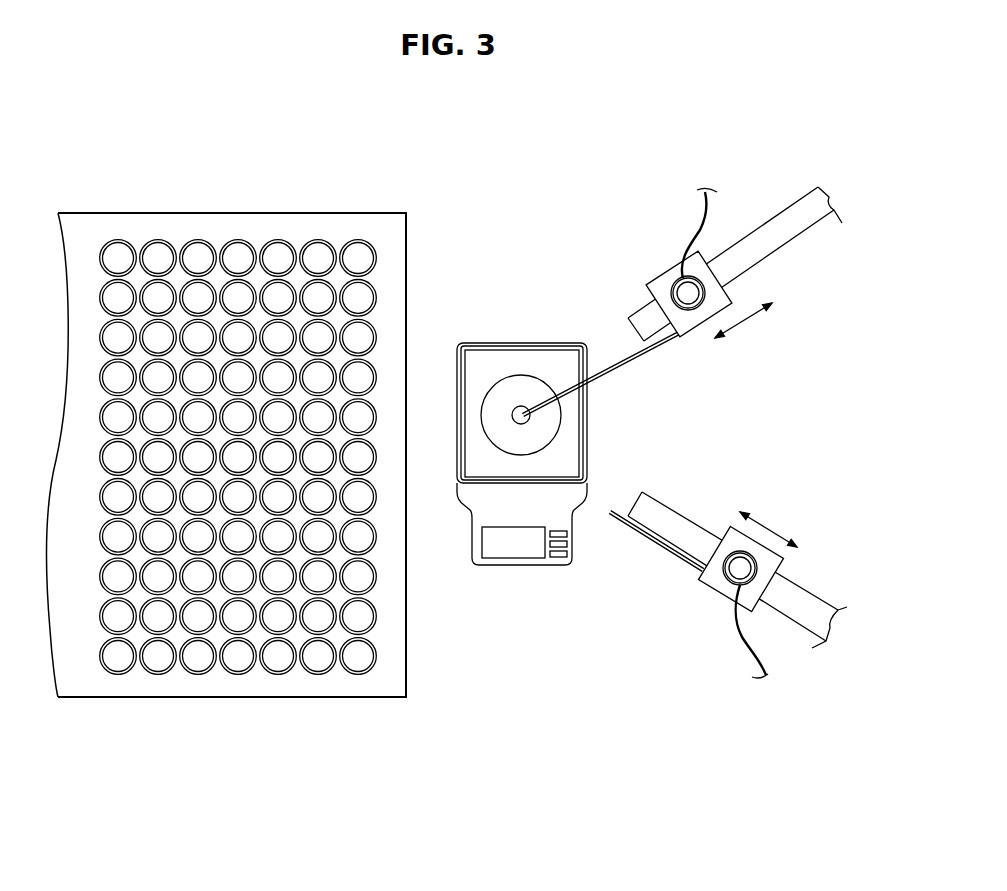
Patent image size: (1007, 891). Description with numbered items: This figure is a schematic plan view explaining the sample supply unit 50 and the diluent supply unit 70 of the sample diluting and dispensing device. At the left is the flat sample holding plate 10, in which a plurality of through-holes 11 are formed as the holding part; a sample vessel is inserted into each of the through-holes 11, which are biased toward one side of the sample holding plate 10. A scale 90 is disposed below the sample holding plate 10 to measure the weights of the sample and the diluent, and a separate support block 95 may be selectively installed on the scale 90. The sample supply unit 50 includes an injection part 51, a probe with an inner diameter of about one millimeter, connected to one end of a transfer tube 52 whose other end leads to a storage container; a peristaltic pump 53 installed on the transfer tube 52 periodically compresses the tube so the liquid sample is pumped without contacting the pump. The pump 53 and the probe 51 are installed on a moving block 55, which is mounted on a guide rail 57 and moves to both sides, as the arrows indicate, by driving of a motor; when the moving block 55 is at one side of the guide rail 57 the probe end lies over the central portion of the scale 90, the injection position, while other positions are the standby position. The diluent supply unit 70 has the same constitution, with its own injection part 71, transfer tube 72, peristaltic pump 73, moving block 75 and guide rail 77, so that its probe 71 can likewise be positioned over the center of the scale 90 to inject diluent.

The sample holding plate 10 is at (221, 697).
The through-holes 11 is at (238, 262).
The scale 90 is at (475, 343).
The support block 95 is at (521, 406).
The sample supply unit 50 is at (728, 269).
The injection part 51 is at (623, 368).
The transfer tube 52 is at (697, 210).
The pump 53 is at (673, 285).
The moving block 55 is at (688, 328).
The guide rail 57 is at (793, 213).
The diluent supply unit 70 is at (737, 573).
The injection part 71 is at (615, 520).
The second cable 72 is at (745, 633).
The peristaltic pump 73 is at (727, 582).
The moving block 75 is at (732, 540).
The guide rail 77 is at (793, 615).